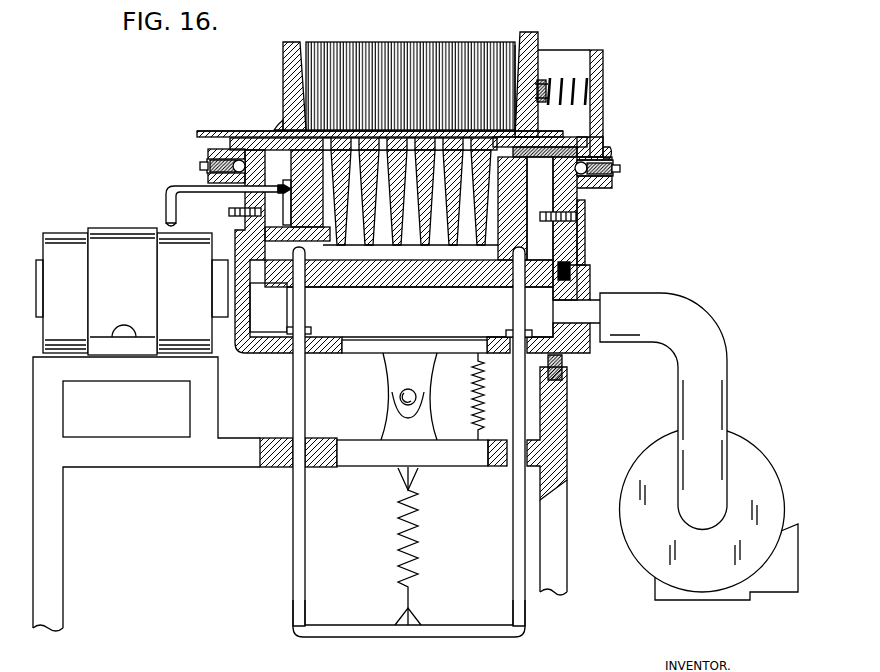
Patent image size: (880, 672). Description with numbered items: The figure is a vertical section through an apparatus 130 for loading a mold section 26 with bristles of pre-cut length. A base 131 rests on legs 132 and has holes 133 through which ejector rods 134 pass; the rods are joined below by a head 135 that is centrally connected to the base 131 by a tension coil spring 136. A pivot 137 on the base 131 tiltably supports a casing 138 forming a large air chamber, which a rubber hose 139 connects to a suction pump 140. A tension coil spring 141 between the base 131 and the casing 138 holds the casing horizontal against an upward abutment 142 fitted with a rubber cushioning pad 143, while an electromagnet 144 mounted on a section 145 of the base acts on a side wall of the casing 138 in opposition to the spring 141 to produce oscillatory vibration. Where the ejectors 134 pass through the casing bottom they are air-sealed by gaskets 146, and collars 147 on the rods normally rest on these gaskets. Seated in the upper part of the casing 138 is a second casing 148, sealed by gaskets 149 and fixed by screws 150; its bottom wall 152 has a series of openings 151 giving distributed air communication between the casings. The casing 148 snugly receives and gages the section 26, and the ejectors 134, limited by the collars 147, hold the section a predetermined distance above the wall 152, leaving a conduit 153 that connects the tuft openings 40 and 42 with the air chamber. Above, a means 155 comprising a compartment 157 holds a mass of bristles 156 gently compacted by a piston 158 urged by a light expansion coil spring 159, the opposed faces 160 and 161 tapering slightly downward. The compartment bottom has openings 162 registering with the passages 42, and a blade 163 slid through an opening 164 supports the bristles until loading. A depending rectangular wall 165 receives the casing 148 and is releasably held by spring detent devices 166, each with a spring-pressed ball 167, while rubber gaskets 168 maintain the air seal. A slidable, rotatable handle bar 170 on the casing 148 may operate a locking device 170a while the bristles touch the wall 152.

The mold section 26 is at (585, 200).
The opening 40 is at (342, 240).
The upwardly tapered passage 42 is at (386, 237).
The apparatus 130 is at (165, 129).
The base 131 is at (480, 467).
The legs 132 is at (62, 620).
The holes 133 is at (505, 476).
The ejector rods 134 is at (303, 537).
The head 135 is at (452, 628).
The tension coil spring 136 is at (398, 547).
The pivot 137 is at (399, 396).
The casing 138 is at (386, 338).
The rubber hose 139 is at (702, 332).
The suction pump 140 is at (652, 580).
The tension coil spring 141 is at (472, 398).
The abutment 142 is at (568, 412).
The rubber cushioning pad 143 is at (568, 366).
The electromagnet 144 is at (73, 225).
The section 145 is at (207, 407).
The gaskets 146 is at (497, 334).
The collars 147 is at (311, 331).
The casing 148 is at (582, 243).
The gaskets 149 is at (580, 268).
The screws 150 is at (580, 216).
The openings 151 is at (284, 282).
The bottom wall 152 is at (376, 282).
The conduit 153 is at (460, 262).
The means 155 is at (621, 44).
The mass of bristles 156 is at (430, 58).
The compartment 157 is at (598, 92).
The piston 158 is at (535, 40).
The expansion coil spring 159 is at (566, 78).
The face 160 is at (315, 62).
The face 161 is at (518, 60).
The openings 162 is at (541, 103).
The blade 163 is at (222, 130).
The opening 164 is at (276, 122).
The depending rectangular wall 165 is at (604, 152).
The spring detent devices 166 is at (193, 167).
The spring-pressed ball 167 is at (585, 190).
The rubber gaskets 168 is at (528, 155).
The handle bar 170 is at (162, 196).
The locking device 170a is at (281, 185).